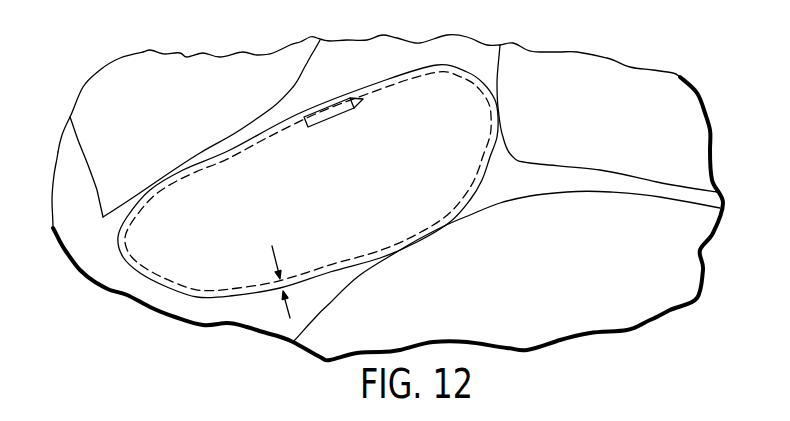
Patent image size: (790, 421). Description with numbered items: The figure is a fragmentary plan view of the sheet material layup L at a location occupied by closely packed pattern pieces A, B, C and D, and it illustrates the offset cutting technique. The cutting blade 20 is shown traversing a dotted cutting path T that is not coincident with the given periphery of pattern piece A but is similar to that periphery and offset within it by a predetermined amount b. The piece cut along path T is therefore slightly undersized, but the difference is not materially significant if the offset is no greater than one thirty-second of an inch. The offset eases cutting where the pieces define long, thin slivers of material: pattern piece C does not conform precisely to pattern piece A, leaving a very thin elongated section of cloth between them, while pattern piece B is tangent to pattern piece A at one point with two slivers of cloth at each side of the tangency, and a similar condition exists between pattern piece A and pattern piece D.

The cutting blade 20 is at (341, 114).
The cutting path T is at (207, 159).
The offset amount b is at (278, 272).
The layup L is at (66, 240).
The pattern piece A is at (421, 148).
The pattern piece B is at (557, 281).
The pattern piece C is at (192, 113).
The pattern piece D is at (607, 113).